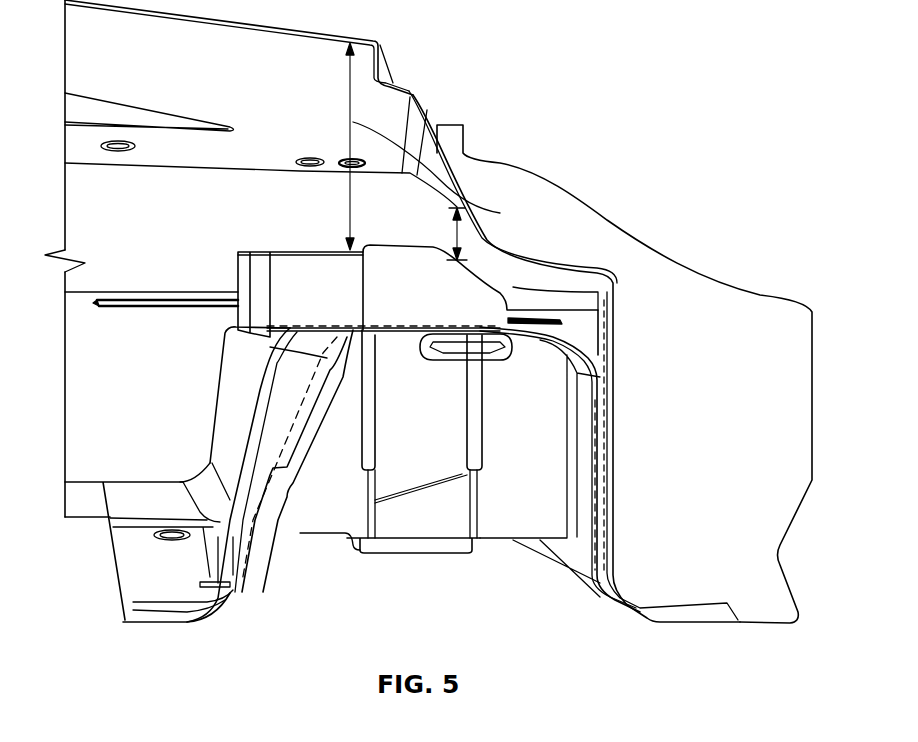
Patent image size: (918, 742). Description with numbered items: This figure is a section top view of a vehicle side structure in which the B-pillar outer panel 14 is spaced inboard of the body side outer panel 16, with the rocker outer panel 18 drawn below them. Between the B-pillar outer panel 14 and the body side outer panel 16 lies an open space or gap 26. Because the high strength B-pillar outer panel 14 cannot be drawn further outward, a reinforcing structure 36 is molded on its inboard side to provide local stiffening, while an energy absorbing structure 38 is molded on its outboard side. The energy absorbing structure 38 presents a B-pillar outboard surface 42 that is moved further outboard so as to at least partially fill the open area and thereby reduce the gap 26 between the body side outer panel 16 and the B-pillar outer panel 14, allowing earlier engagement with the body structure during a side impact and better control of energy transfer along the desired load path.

The B-pillar outer panel 14 is at (143, 547).
The body side outer panel 16 is at (400, 85).
The rocker outer panel 18 is at (156, 471).
The gap 26 is at (462, 232).
The reinforcing structure 36 is at (418, 475).
The energy absorbing structure 38 is at (281, 249).
The B-pillar outboard surface 42 is at (402, 247).